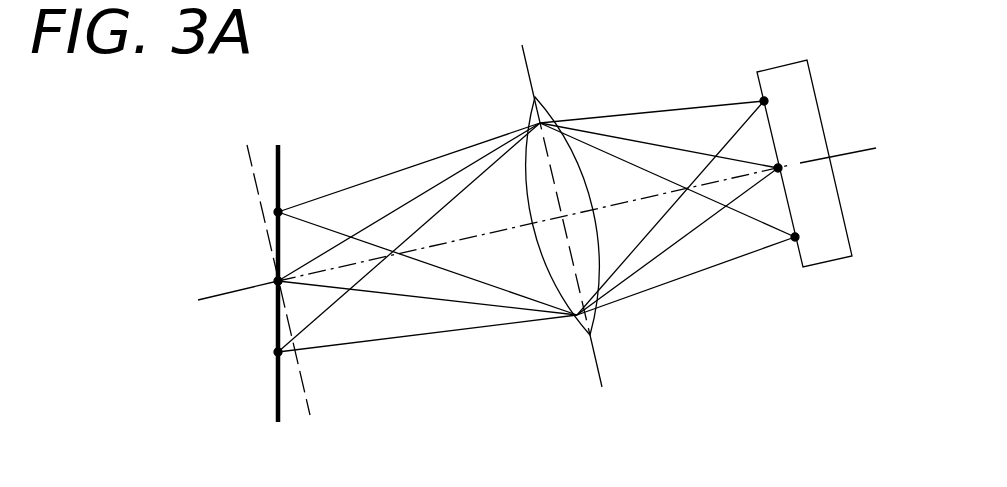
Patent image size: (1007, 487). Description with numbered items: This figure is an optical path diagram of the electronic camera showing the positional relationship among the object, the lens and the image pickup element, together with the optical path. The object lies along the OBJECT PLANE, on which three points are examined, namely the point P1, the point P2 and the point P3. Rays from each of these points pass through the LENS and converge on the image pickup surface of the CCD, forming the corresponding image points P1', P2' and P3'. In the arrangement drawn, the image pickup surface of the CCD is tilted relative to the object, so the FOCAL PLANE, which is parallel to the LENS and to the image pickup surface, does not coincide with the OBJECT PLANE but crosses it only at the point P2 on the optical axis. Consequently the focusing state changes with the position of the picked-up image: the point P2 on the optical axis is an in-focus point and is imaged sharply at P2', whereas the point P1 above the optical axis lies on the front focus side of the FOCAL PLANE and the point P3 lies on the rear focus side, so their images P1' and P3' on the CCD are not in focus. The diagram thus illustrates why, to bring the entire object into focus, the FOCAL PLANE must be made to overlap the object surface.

The point P1 is at (299, 181).
The point P2 is at (250, 265).
The point P3 is at (252, 354).
The image point P1' is at (777, 264).
The image point P2' is at (720, 120).
The image point P3' is at (739, 77).
The focal plane FOCAL PLANE is at (255, 181).
The object plane OBJECT PLANE is at (276, 398).
The lens LENS is at (578, 318).
The image pickup element CCD is at (814, 268).